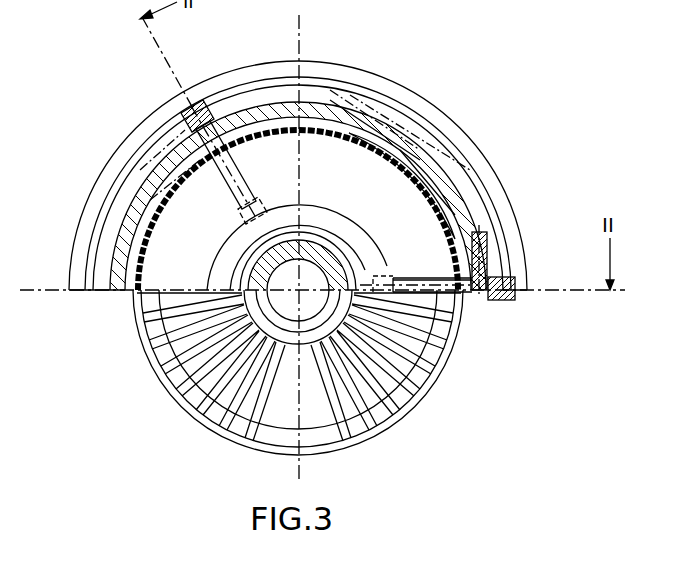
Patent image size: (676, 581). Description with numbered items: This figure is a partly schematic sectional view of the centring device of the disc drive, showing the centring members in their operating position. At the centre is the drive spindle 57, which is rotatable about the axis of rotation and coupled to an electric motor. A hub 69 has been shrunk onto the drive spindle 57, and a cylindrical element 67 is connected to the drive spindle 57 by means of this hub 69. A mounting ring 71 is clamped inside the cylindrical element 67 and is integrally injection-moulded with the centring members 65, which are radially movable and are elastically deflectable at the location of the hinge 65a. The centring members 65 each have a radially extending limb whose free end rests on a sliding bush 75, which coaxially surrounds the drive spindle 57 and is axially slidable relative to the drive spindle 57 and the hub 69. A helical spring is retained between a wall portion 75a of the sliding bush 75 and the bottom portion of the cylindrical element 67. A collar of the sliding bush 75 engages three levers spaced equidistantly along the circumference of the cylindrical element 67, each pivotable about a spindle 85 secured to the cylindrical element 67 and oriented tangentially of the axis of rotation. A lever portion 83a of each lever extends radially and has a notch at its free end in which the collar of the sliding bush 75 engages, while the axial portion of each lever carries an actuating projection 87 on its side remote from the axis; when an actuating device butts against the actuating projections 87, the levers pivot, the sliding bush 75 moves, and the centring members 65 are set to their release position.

The drive spindle 57 is at (303, 268).
The centring members 65 is at (200, 412).
The hinge 65a is at (443, 214).
The cylindrical element 67 is at (108, 293).
The hub 69 is at (333, 262).
The mounting ring 71 is at (447, 184).
The sliding bush 75 is at (382, 274).
The wall portion 75a is at (395, 270).
The lever portion 83a is at (233, 168).
The spindle 85 is at (250, 72).
The actuating projection 87 is at (183, 120).